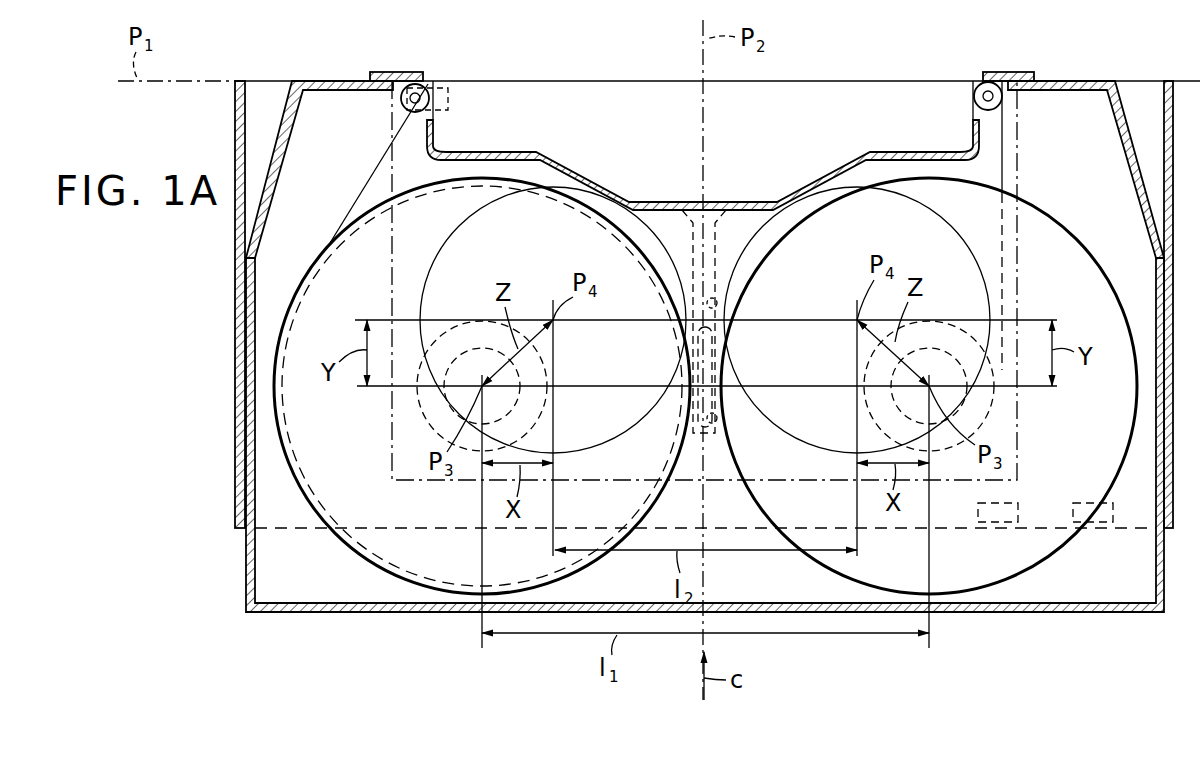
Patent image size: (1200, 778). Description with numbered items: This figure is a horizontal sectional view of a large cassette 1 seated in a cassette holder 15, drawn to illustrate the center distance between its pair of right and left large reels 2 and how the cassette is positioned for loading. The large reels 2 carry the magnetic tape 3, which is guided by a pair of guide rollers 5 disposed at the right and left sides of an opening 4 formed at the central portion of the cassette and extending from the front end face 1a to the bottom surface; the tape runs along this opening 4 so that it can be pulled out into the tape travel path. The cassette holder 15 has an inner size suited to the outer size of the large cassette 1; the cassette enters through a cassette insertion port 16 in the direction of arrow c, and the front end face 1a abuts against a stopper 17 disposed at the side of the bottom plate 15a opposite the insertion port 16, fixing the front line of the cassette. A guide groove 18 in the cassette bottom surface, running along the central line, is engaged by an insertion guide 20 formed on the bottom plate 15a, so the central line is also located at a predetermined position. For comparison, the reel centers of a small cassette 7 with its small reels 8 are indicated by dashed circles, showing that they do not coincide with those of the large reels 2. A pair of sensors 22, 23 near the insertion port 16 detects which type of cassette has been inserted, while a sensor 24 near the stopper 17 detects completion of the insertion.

The large cassette 1 is at (1110, 612).
The front end face 1a is at (328, 83).
The large reels 2 is at (278, 417).
The magnetic tape 3 is at (603, 81).
The opening 4 is at (850, 110).
The guide rollers 5 is at (423, 88).
The small cassette 7 is at (397, 452).
The small reels 8 is at (618, 420).
The cassette holder 15 is at (235, 306).
The bottom plate 15a is at (263, 91).
The cassette insertion port 16 is at (240, 533).
The stopper 17 is at (393, 78).
The guide groove 18 is at (718, 299).
The insertion guide 20 is at (718, 422).
The sensor 22 is at (1100, 522).
The sensor 23 is at (994, 522).
The sensor 24 is at (448, 99).